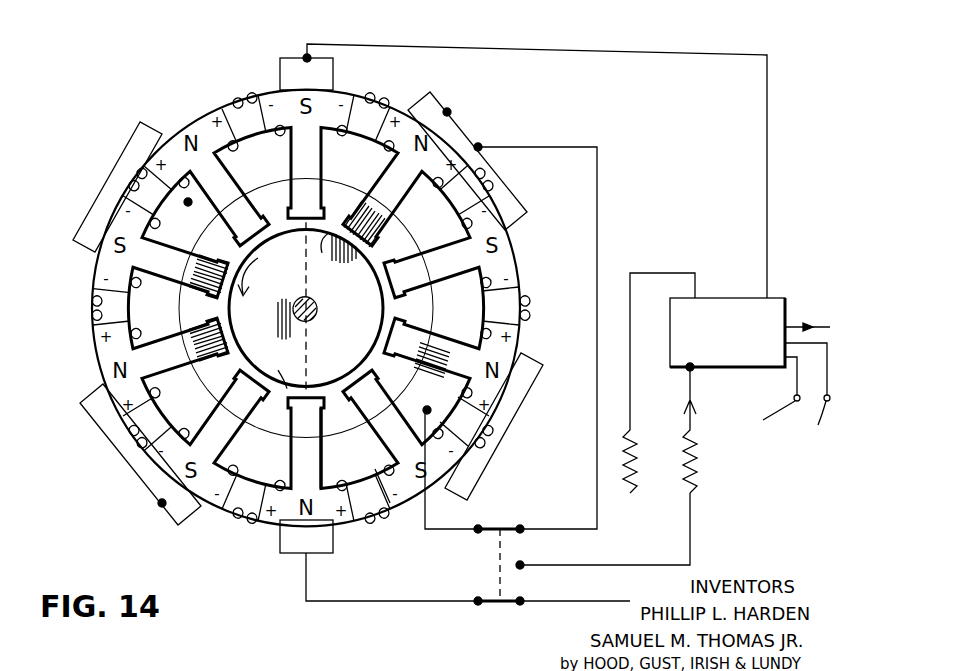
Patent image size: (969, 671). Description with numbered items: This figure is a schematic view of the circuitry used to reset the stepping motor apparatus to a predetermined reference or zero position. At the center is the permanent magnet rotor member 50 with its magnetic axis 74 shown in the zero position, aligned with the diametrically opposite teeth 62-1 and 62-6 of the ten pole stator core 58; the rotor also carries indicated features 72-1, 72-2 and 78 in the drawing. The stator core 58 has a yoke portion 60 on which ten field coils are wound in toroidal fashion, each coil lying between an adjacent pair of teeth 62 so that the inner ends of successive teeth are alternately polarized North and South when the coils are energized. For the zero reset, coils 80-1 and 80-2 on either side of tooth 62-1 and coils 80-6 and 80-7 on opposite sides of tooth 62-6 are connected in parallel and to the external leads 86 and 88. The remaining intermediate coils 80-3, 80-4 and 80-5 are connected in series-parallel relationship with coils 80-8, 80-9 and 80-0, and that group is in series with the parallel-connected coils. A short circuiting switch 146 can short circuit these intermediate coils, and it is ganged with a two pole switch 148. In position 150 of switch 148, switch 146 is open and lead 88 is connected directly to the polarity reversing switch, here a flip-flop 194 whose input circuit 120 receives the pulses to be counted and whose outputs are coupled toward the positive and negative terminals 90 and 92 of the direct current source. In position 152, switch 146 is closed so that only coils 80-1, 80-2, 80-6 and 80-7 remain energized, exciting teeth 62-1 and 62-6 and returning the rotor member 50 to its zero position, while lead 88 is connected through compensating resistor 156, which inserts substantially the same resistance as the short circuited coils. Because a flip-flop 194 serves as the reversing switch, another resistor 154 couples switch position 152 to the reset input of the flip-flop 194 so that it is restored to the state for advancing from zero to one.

The permanent magnet rotor member 50 is at (365, 317).
The stator core 58 is at (368, 91).
The yoke portion 60 is at (175, 138).
The teeth 62 is at (428, 278).
The tooth 62-1 is at (325, 158).
The tooth 62-6 is at (310, 428).
The rotor tooth 72-1 is at (339, 264).
The rotor tooth 72-2 is at (296, 367).
The magnetic axis 74 is at (312, 357).
The rotation direction 78 is at (256, 283).
The field coil 80-0 is at (123, 180).
The field coil 80-1 is at (241, 88).
The field coil 80-2 is at (392, 95).
The field coil 80-3 is at (480, 180).
The field coil 80-4 is at (523, 293).
The field coil 80-5 is at (498, 435).
The field coil 80-6 is at (385, 532).
The field coil 80-7 is at (240, 527).
The field coil 80-8 is at (120, 462).
The field coil 80-9 is at (93, 320).
The external lead 86 is at (673, 52).
The external lead 88 is at (400, 601).
The positive terminal 90 is at (826, 405).
The negative terminal 92 is at (790, 405).
The input circuit 120 is at (815, 322).
The short circuiting switch 146 is at (497, 525).
The two pole switch 148 is at (492, 603).
The switch position 150 is at (523, 563).
The switch position 152 is at (522, 603).
The resistor 154 is at (687, 480).
The compensating resistor 156 is at (640, 440).
The flip-flop 194 is at (733, 297).